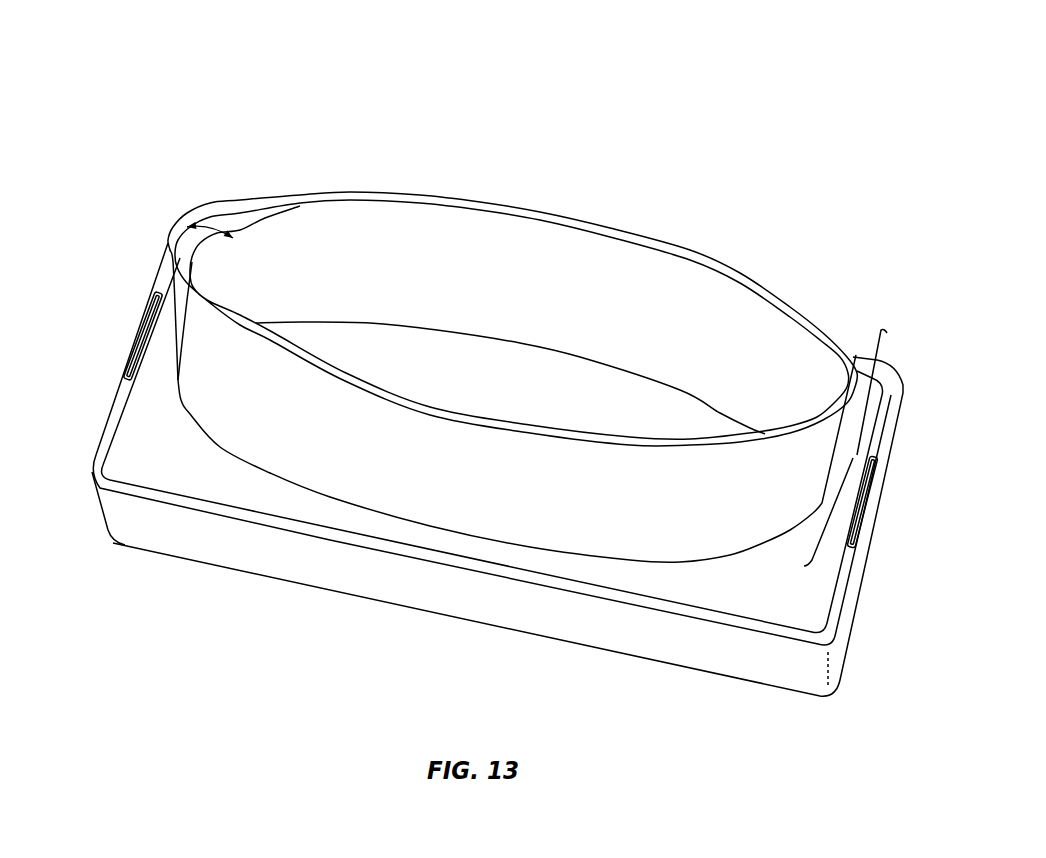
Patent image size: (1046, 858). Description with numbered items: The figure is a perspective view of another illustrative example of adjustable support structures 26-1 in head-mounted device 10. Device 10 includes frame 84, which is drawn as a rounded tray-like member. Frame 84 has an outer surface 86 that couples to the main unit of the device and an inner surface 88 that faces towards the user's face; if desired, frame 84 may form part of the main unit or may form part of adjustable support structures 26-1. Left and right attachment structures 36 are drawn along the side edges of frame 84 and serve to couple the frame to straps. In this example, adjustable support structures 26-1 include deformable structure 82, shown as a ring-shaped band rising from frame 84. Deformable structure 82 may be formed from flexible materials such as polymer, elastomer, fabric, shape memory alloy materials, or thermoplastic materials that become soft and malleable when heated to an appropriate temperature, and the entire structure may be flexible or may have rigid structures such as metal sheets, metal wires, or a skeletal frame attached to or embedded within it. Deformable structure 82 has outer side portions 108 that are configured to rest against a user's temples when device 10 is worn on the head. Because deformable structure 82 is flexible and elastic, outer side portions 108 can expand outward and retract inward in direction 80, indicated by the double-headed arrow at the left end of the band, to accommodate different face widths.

The head-mounted device 10 is at (623, 96).
The direction 80 is at (203, 222).
The deformable structure 82 is at (505, 238).
The outer side portions 108 is at (813, 443).
The attachment structures 36 is at (137, 347).
The inner surface 88 is at (177, 482).
The outer surface 86 is at (213, 567).
The frame 84 is at (680, 663).
The adjustable support structures 26-1 is at (868, 458).